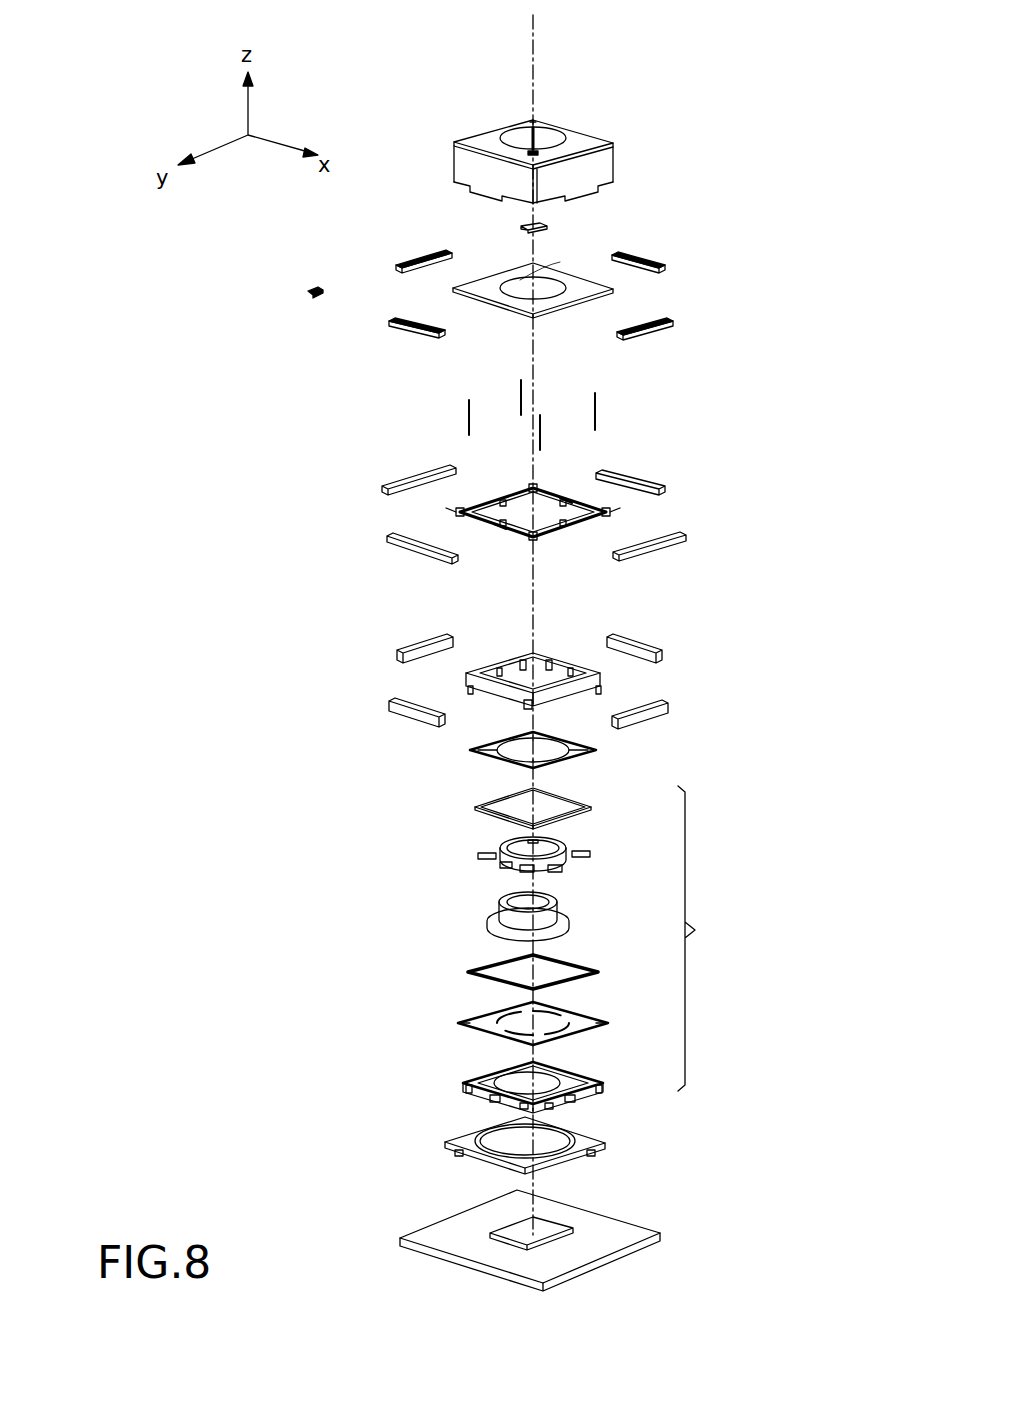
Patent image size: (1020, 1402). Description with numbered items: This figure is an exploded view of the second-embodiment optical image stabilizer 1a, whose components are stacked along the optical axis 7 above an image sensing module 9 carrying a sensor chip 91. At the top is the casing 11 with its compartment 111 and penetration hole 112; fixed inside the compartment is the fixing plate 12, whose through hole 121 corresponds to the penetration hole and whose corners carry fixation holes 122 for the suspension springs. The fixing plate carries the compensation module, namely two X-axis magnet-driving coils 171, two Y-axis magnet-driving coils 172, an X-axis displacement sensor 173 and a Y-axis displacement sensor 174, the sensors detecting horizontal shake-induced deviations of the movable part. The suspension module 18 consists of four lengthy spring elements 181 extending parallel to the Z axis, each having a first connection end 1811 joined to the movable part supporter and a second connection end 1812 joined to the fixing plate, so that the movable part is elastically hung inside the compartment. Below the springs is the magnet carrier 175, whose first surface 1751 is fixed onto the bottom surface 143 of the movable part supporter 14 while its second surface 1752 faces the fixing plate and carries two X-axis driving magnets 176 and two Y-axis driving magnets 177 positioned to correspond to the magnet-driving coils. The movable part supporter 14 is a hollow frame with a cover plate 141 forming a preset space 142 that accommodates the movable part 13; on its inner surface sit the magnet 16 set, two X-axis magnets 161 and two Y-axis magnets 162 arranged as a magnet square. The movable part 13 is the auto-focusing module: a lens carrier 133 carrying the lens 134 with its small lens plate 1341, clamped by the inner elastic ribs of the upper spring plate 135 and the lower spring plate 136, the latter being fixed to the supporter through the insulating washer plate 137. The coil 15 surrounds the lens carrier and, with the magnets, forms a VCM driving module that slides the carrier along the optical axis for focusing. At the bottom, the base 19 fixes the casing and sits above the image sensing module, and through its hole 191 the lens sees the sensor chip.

The optical image stabilizer 1a is at (753, 276).
The optical axis 7 is at (535, 47).
The image sensing module 9 is at (540, 1232).
The sensor chip 91 is at (555, 1230).
The casing 11 is at (576, 131).
The compartment 111 is at (573, 143).
The penetration hole 112 is at (541, 134).
The fixing plate 12 is at (567, 287).
The through hole 121 is at (548, 292).
The fixation hole 122 is at (520, 280).
The movable part 13 is at (710, 938).
The lens carrier 133 is at (577, 858).
The lens 134 is at (533, 909).
The small lens plate 1341 is at (514, 900).
The upper spring plate 135 is at (560, 766).
The lower spring plate 136 is at (560, 1037).
The washer plate 137 is at (565, 988).
The movable part supporter 14 is at (542, 681).
The cover plate 141 is at (468, 1084).
The preset space 142 is at (548, 670).
The bottom surface 143 is at (522, 660).
The coil 15 is at (476, 808).
The magnet 16 is at (354, 661).
The X-axis magnet 161 is at (655, 648).
The Y-axis magnet 162 is at (410, 648).
The X-axis magnet-driving coil 171 is at (650, 258).
The Y-axis magnet-driving coil 172 is at (396, 266).
The X-axis displacement sensor 173 is at (311, 294).
The Y-axis displacement sensor 174 is at (525, 224).
The magnet carrier 175 is at (543, 522).
The first surface 1751 is at (497, 530).
The second surface 1752 is at (546, 498).
The X-axis driving magnet 176 is at (662, 480).
The Y-axis driving magnet 177 is at (390, 482).
The suspension module 18 is at (516, 401).
The spring element 181 is at (521, 380).
The first connection end 1811 is at (597, 428).
The second connection end 1812 is at (597, 395).
The base 19 is at (514, 1140).
The hole 191 is at (556, 1140).